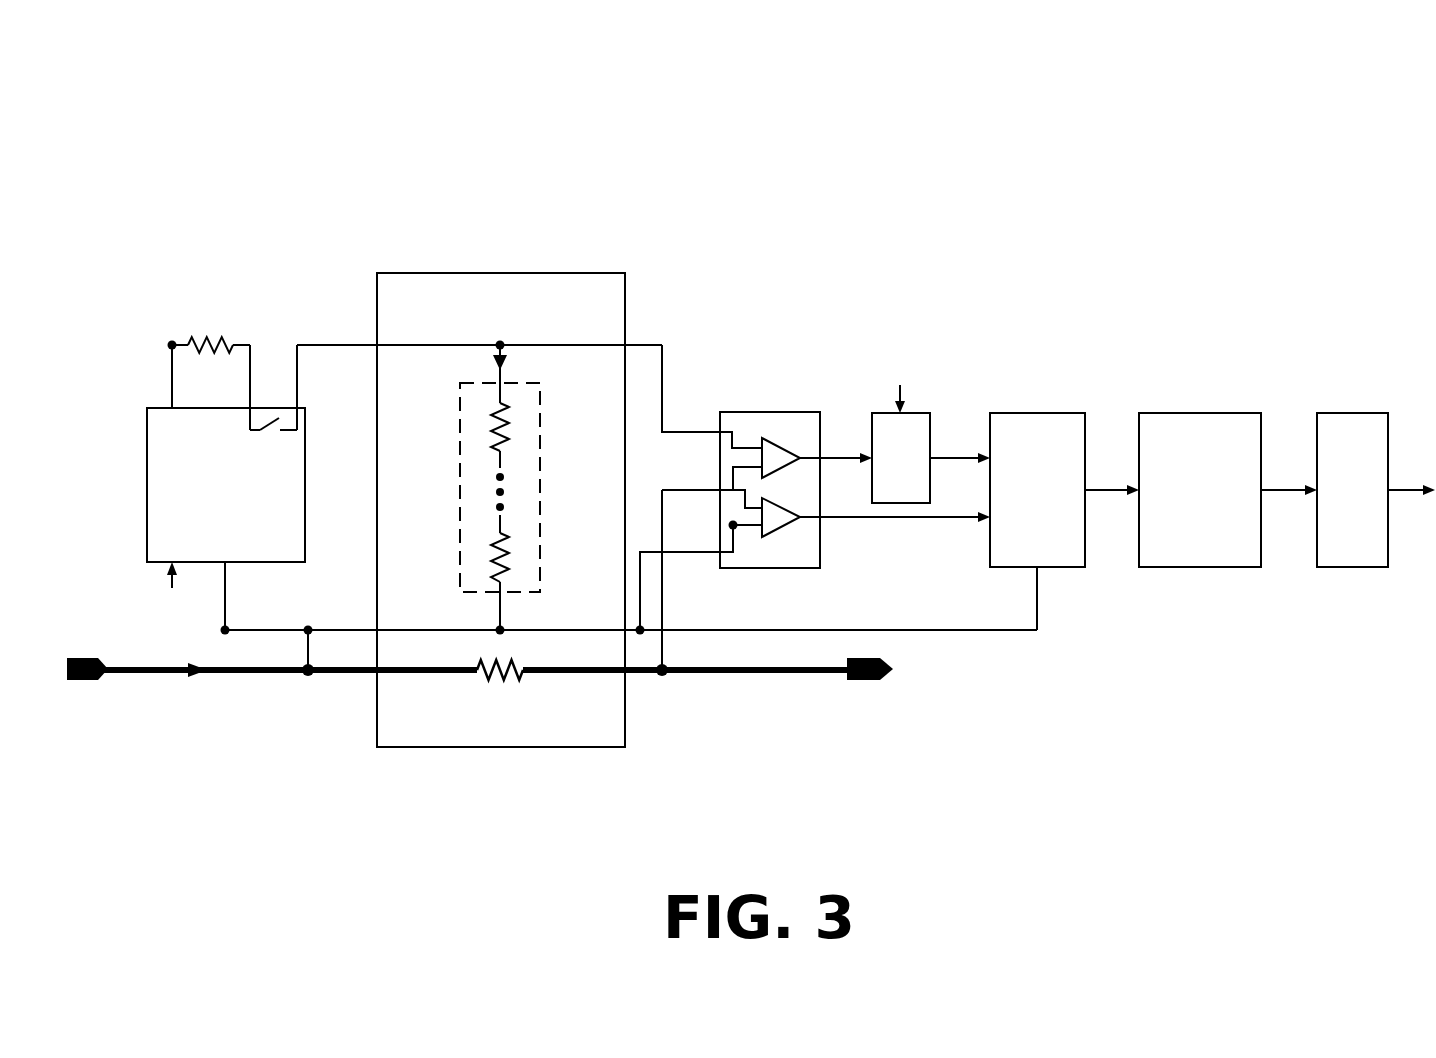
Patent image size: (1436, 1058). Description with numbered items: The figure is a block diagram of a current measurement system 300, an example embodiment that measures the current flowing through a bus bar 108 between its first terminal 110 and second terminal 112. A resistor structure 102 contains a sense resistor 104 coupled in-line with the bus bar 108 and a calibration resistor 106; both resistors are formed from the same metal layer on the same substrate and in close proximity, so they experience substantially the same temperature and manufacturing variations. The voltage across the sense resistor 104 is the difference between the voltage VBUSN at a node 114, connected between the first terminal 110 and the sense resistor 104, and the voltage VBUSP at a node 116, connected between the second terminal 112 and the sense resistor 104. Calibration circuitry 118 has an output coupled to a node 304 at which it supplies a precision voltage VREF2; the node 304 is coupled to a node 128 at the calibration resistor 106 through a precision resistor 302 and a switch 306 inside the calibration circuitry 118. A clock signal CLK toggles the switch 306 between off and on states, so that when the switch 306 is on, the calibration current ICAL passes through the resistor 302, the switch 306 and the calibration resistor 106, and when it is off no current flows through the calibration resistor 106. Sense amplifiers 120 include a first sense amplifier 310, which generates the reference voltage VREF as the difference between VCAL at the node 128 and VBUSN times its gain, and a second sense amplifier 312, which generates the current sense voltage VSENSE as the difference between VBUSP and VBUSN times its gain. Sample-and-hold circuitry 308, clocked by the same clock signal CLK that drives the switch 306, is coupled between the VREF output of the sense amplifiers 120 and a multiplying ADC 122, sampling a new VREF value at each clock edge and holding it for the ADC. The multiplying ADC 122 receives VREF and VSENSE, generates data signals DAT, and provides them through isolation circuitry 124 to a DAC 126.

The current measurement system 300 is at (1322, 76).
The resistor 302 is at (196, 326).
The node 304 is at (164, 353).
The switch 306 is at (260, 439).
The calibration circuitry 118 is at (212, 559).
The resistor structure 102 is at (587, 301).
The node 128 is at (500, 345).
The calibration resistor 106 is at (540, 515).
The sense resistor 104 is at (518, 686).
The bus bar 108 is at (778, 683).
The first terminal 110 is at (97, 682).
The second terminal 112 is at (892, 675).
The node 114 is at (308, 673).
The node 116 is at (665, 674).
The sense amplifiers 120 is at (806, 493).
The first sense amplifier 310 is at (766, 434).
The second sense amplifier 312 is at (768, 545).
The sample-and-hold circuitry 308 is at (886, 481).
The multiplying ADC 122 is at (1052, 527).
The isolation circuitry 124 is at (1185, 527).
The DAC 126 is at (1367, 516).